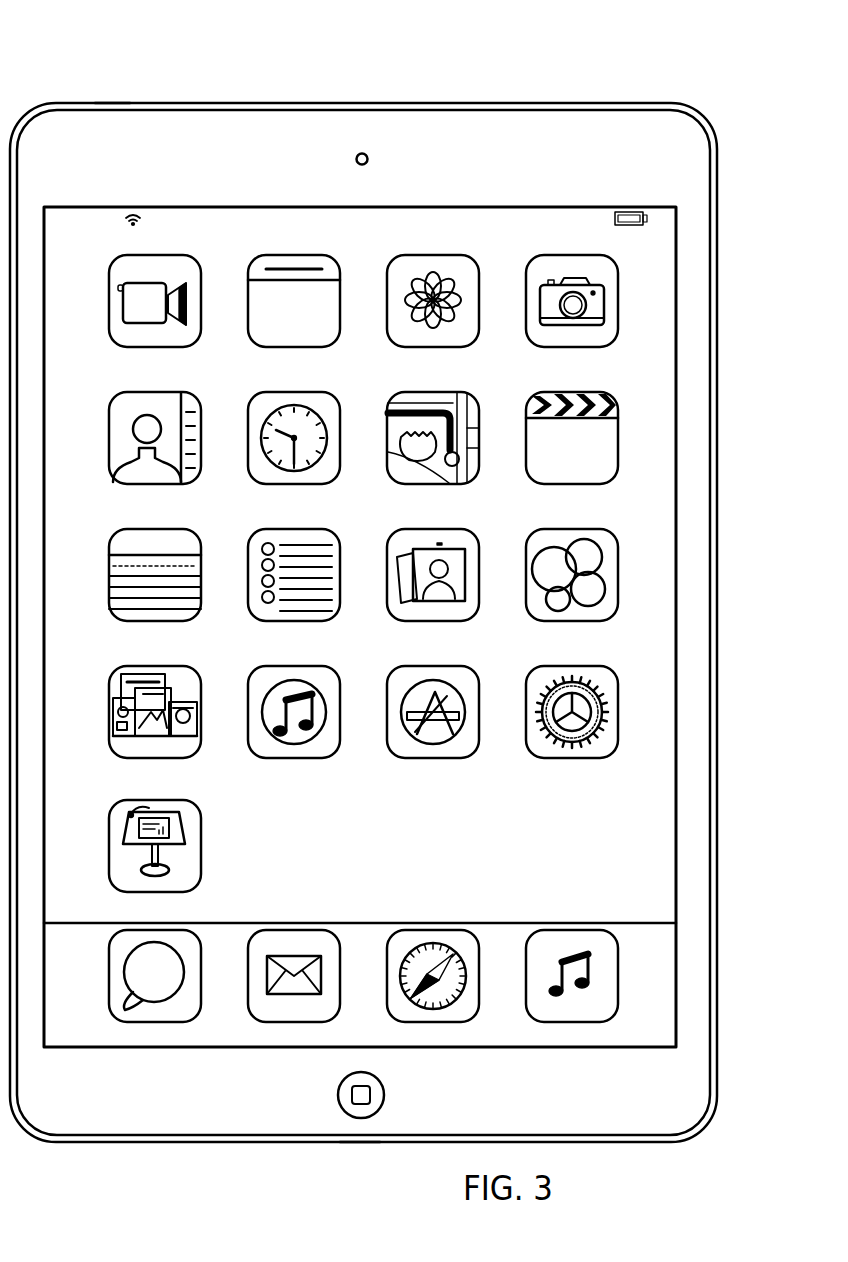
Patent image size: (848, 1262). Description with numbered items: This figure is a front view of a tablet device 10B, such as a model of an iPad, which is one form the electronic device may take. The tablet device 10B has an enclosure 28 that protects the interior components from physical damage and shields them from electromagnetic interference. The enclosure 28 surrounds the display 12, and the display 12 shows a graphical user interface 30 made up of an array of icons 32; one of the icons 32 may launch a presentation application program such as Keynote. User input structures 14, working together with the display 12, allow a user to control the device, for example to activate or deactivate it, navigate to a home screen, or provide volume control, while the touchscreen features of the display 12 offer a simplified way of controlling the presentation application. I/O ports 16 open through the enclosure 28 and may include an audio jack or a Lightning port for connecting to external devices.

The tablet device 10B is at (126, 37).
The display 12 is at (676, 823).
The user input structures 14 is at (612, 103).
The I/O ports 16 is at (110, 103).
The enclosure 28 is at (717, 585).
The graphical user interface 30 is at (645, 778).
The icons 32 is at (202, 834).